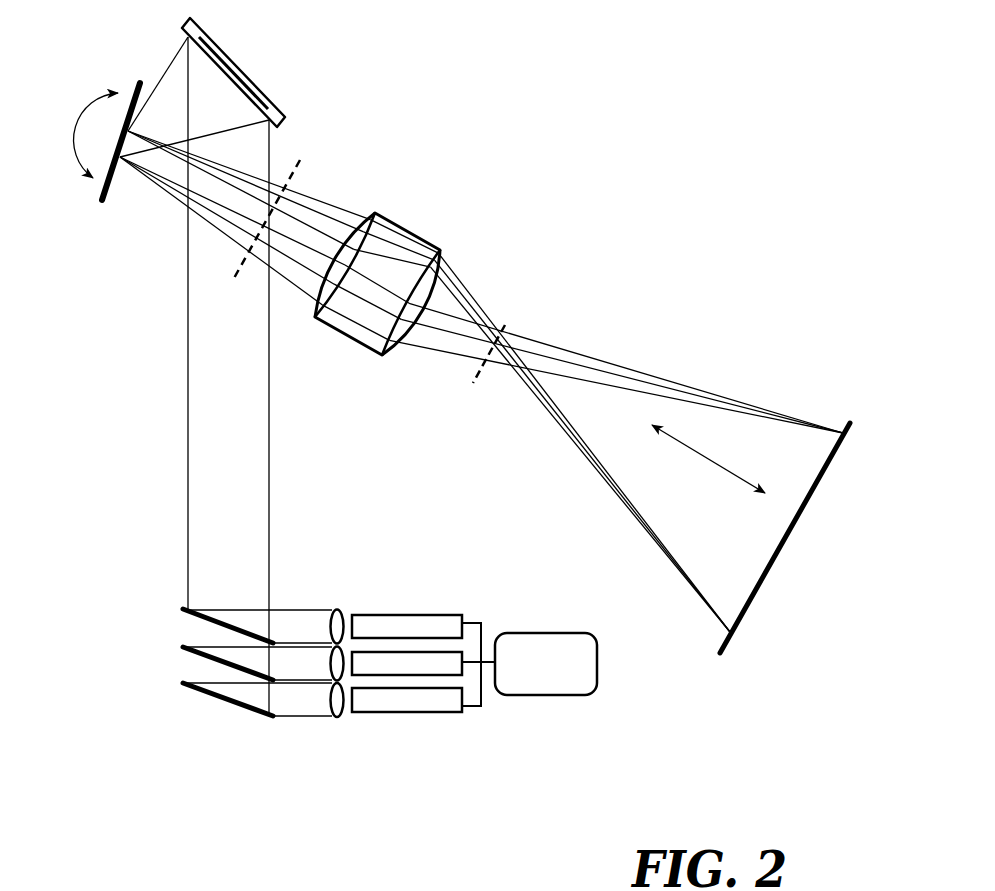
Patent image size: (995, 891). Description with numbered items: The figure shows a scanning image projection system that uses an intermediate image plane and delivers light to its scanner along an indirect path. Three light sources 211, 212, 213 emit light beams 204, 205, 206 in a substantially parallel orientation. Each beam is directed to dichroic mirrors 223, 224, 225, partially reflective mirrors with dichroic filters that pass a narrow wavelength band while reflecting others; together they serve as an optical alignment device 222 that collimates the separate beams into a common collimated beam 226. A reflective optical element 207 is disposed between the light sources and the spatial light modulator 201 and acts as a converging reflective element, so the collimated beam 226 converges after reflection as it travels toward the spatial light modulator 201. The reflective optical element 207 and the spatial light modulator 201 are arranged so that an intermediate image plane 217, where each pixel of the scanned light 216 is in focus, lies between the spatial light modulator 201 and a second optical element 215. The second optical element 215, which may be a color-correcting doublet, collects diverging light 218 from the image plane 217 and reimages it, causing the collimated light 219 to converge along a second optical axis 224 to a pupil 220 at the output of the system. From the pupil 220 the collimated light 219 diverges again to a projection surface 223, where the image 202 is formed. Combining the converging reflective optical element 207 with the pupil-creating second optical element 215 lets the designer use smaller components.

The spatial light modulator 201 is at (135, 93).
The image 202 is at (757, 565).
The light beam 204 is at (372, 660).
The light beam 205 is at (320, 647).
The light beam 206 is at (288, 610).
The reflective optical element 207 is at (263, 90).
The light source 211 is at (415, 713).
The light source 212 is at (465, 650).
The light source 213 is at (422, 615).
The second optical element 215 is at (402, 223).
The scanned light 216 is at (137, 193).
The intermediate image plane 217 is at (298, 162).
The diverging light 218 is at (318, 195).
The collimated light 219 is at (478, 300).
The pupil 220 is at (470, 373).
The optical alignment device 222 is at (317, 636).
The dichroic mirror 223 is at (787, 543).
The dichroic mirror 224 is at (708, 458).
The dichroic mirror 225 is at (200, 620).
The collimated beam 226 is at (227, 317).